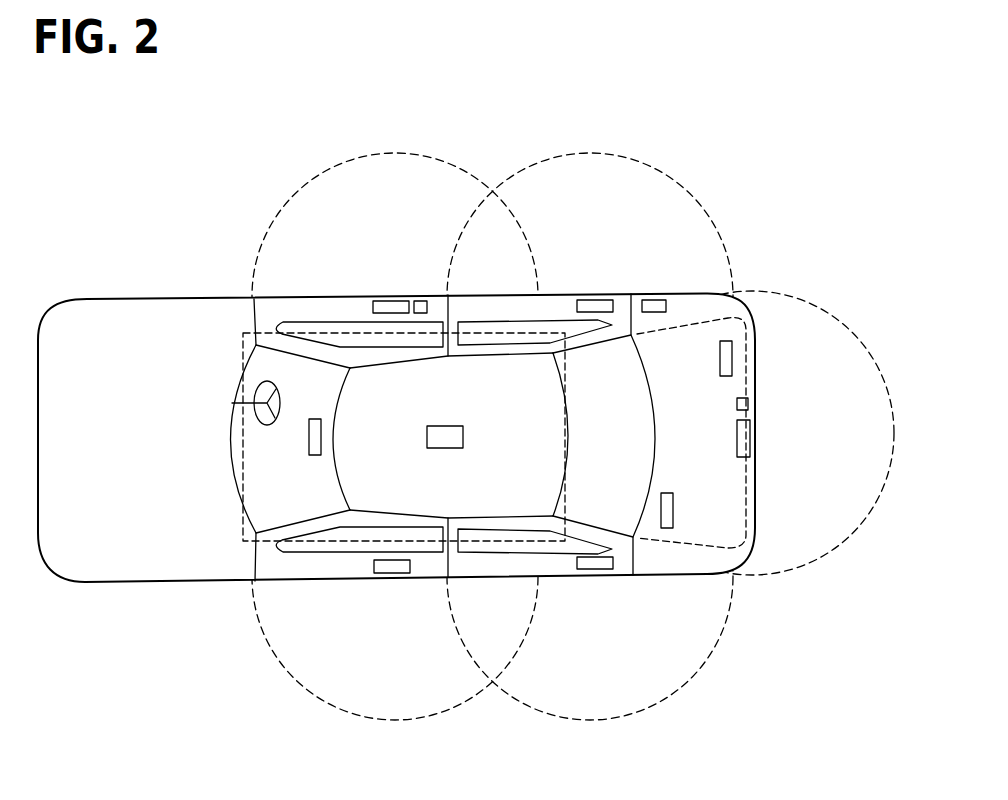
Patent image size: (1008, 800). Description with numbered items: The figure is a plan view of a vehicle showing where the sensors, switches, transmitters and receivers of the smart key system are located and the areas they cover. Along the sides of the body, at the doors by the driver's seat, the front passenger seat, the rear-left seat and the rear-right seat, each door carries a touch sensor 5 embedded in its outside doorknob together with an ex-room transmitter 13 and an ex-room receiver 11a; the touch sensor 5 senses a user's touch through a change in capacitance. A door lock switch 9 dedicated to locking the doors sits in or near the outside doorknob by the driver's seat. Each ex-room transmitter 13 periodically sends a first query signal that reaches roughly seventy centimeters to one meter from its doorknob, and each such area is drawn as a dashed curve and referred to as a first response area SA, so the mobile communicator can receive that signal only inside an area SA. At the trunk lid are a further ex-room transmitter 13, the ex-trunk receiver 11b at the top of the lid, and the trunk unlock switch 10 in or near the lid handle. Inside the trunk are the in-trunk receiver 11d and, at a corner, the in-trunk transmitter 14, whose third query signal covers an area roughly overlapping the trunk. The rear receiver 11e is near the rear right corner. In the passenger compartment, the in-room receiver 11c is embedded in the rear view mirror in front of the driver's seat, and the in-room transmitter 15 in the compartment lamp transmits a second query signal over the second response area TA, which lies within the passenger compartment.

The ex-room transmitter 13 is at (600, 438).
The touch sensor 5 is at (490, 438).
The ex-room receiver 11a is at (387, 301).
The ex-trunk receiver 11b is at (750, 440).
The in-room receiver 11c is at (308, 448).
The in-trunk receiver 11d is at (732, 358).
The rear receiver 11e is at (656, 300).
The door lock switch 9 is at (422, 300).
The trunk unlock switch 10 is at (748, 404).
The in-trunk transmitter 14 is at (667, 528).
The in-room transmitter 15 is at (463, 437).
The second response area TA is at (243, 468).
The first response area SA is at (393, 152).